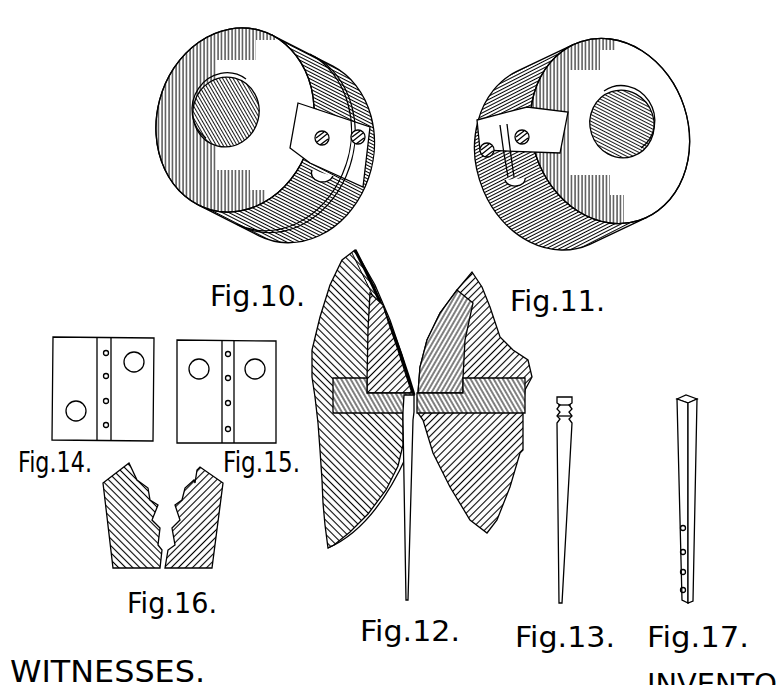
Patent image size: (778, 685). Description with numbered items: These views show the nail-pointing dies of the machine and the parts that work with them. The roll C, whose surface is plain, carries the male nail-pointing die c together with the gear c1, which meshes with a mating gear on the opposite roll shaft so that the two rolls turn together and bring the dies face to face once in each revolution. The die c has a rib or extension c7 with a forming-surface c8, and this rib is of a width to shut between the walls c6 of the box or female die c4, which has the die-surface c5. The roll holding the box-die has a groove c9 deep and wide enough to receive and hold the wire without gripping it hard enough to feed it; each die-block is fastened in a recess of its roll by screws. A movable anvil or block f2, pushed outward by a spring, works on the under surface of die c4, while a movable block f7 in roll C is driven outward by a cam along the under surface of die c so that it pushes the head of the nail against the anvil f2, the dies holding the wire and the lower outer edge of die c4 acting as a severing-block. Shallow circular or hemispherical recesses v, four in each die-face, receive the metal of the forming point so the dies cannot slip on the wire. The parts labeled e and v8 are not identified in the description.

In FIG. 10, the gear c1 is at (182, 145).
In FIG. 11, the nail-pointing die c is at (673, 173).
In FIG. 10, the nail-pointing die c4 is at (338, 168).
In FIG. 12, the nail-pointing die c4 is at (385, 312).
In FIG. 14, the nail-pointing die c4 is at (103, 385).
In FIG. 10, the die-surface c5 is at (343, 150).
In FIG. 10, the walls c6 is at (343, 157).
In FIG. 11, the rib or extension c7 is at (510, 150).
In FIG. 11, the forming-surface c8 is at (506, 163).
In FIG. 10, the groove c9 is at (323, 97).
In FIG. 12, the groove c9 is at (363, 399).
In FIG. 11, the roll C is at (516, 174).
In FIG. 12, the plate e is at (462, 303).
In FIG. 15, the plate e is at (228, 393).
In FIG. 10, the movable anvil or block f2 is at (330, 180).
In FIG. 12, the movable anvil or block f2 is at (333, 412).
In FIG. 11, the movable block f7 is at (502, 181).
In FIG. 12, the movable block f7 is at (517, 413).
In FIG. 13, the movable block f7 is at (558, 399).
In FIG. 14, the shallow recesses v is at (109, 401).
In FIG. 15, the shallow recesses v is at (231, 403).
In FIG. 16, the shallow recesses v is at (192, 475).
In FIG. 12, the needle v8 is at (426, 440).